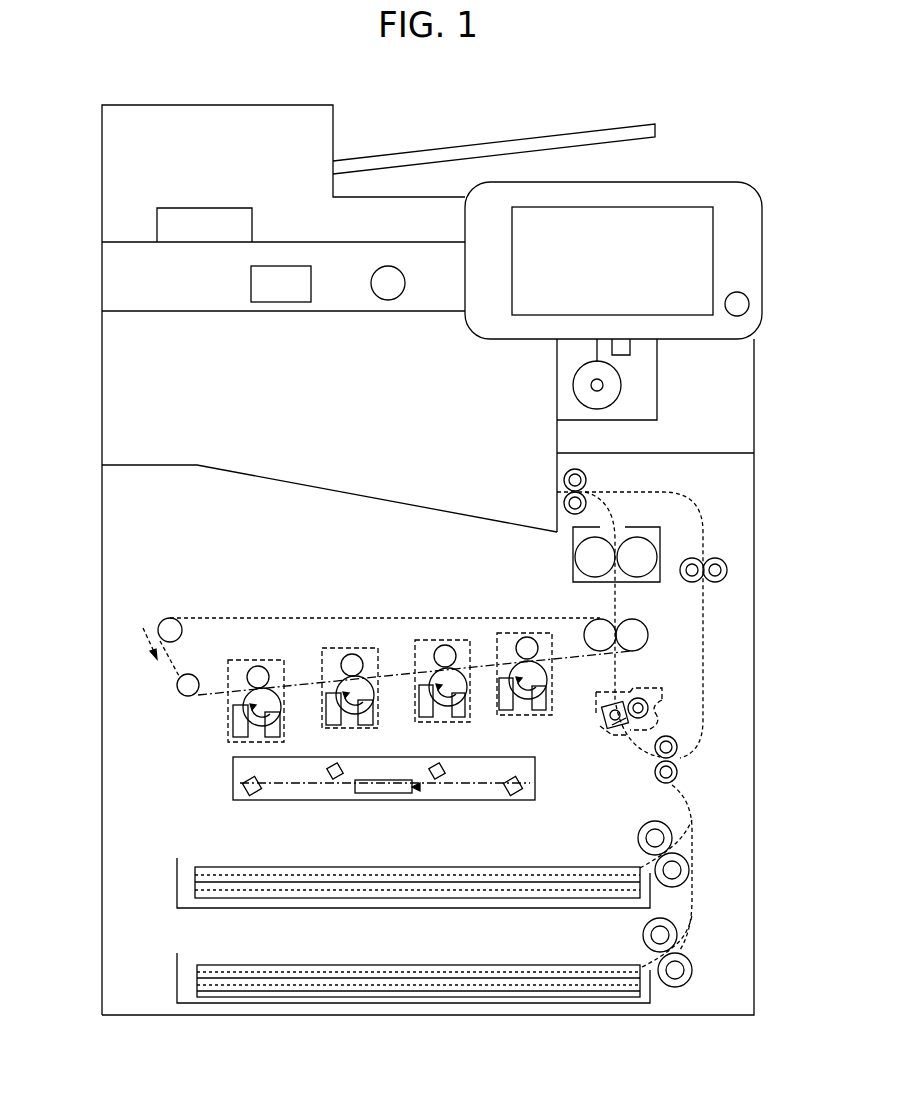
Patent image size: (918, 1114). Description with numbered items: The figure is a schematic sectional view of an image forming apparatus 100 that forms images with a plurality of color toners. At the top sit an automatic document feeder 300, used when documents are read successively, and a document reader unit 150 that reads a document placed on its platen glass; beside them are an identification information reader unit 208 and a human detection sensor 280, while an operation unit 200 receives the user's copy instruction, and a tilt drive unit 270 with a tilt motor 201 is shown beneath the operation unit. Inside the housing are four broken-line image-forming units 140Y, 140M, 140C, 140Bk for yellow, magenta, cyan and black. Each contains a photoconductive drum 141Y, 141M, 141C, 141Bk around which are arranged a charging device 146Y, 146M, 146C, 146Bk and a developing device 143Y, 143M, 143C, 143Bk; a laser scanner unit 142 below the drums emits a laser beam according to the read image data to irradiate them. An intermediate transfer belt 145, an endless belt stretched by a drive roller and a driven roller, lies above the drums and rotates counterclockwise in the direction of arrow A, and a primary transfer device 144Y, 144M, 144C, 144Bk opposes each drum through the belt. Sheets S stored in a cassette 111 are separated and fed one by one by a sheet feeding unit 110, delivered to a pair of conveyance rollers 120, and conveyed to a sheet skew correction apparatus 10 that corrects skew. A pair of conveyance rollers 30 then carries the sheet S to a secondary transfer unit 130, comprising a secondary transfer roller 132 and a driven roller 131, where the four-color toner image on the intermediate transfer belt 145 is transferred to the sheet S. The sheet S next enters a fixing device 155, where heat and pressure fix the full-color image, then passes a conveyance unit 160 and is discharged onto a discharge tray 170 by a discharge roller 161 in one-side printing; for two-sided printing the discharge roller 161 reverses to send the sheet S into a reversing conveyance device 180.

The image forming apparatus 100 is at (90, 366).
The automatic document feeder 300 is at (102, 171).
The document reader unit 150 is at (102, 280).
The identification information reader unit 208 is at (280, 302).
The human detection sensor 280 is at (388, 300).
The operation unit 200 is at (762, 244).
The tilt drive unit 270 is at (673, 354).
The tilt motor 201 is at (620, 382).
The discharge tray 170 is at (326, 492).
The discharge roller 161 is at (563, 478).
The conveyance unit 160 is at (622, 522).
The reversing conveyance device 180 is at (738, 521).
The fixing device 155 is at (574, 570).
The intermediate transfer belt 145 is at (190, 618).
The arrow A is at (143, 643).
The secondary transfer unit 130 is at (638, 612).
The secondary transfer roller 132 is at (648, 630).
The driven roller 131 is at (618, 660).
The pair of conveyance rollers 30 is at (656, 702).
The sheet skew correction apparatus 10 is at (604, 718).
The pair of conveyance rollers 120 is at (685, 764).
The sheet feeding unit 110 is at (678, 800).
The cassette 111 is at (440, 906).
The sheet S is at (496, 875).
The laser scanner unit 142 is at (242, 800).
The image-forming unit 140Y is at (255, 660).
The image-forming unit 140M is at (349, 648).
The image-forming unit 140C is at (440, 640).
The image-forming unit 140Bk is at (527, 637).
The developing device 143Y is at (233, 721).
The developing device 143M is at (340, 712).
The developing device 143C is at (430, 705).
The developing device 143Bk is at (523, 700).
The primary transfer device 144Y is at (247, 675).
The primary transfer device 144M is at (341, 664).
The primary transfer device 144C is at (434, 657).
The primary transfer device 144Bk is at (514, 650).
The charging device 146Y is at (246, 742).
The charging device 146M is at (334, 728).
The charging device 146C is at (433, 720).
The charging device 146Bk is at (513, 712).
The photoconductive drum 141Y is at (272, 740).
The photoconductive drum 141M is at (368, 728).
The photoconductive drum 141C is at (466, 720).
The photoconductive drum 141Bk is at (546, 700).